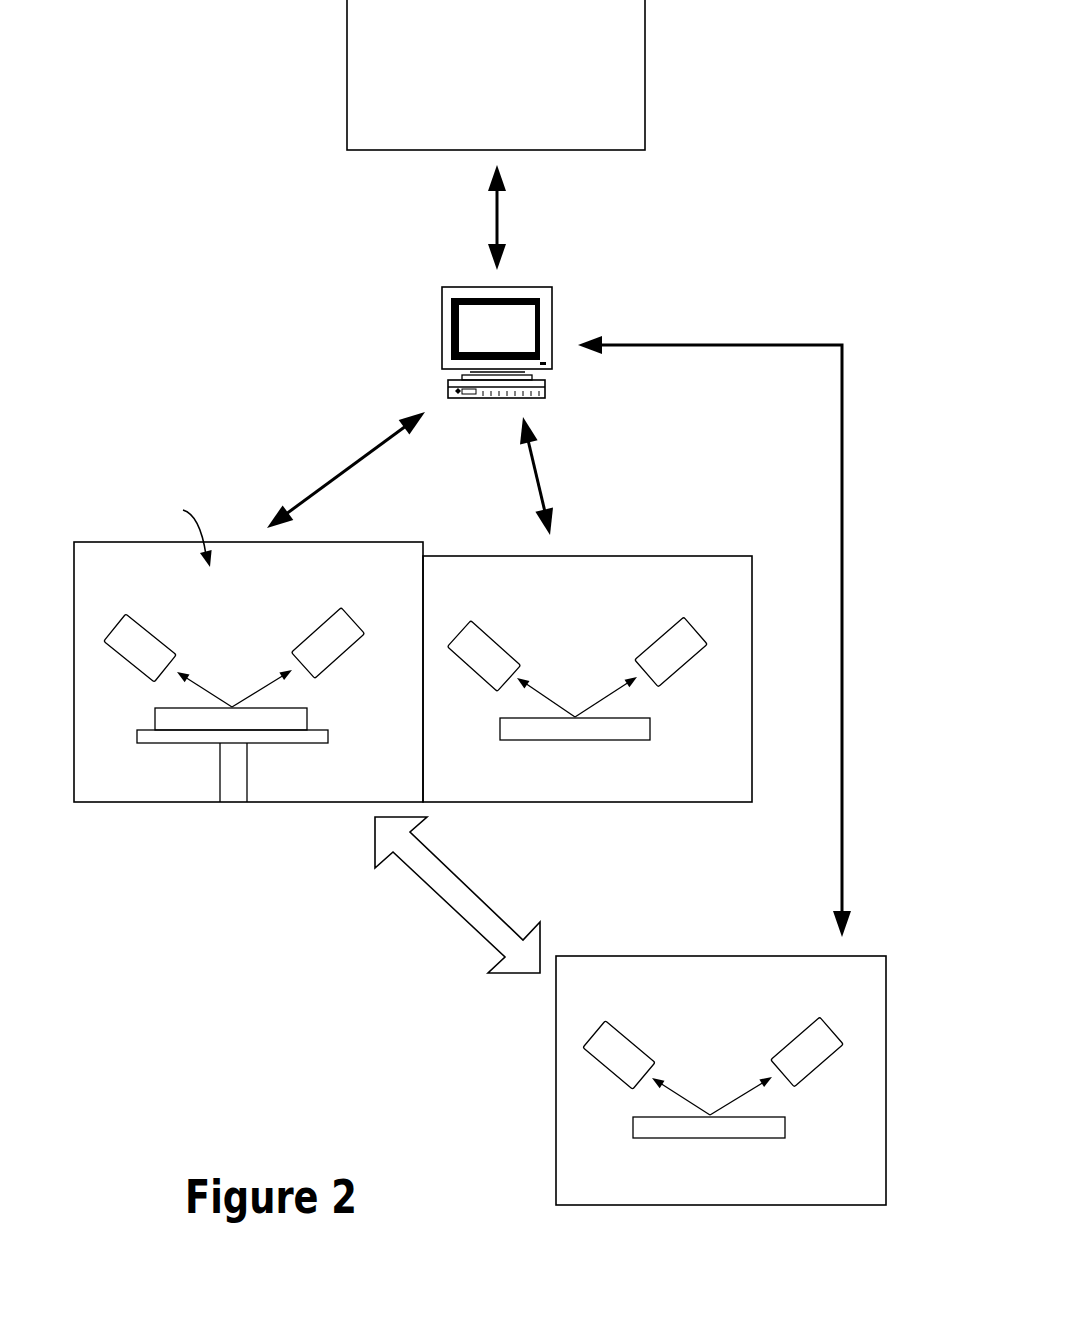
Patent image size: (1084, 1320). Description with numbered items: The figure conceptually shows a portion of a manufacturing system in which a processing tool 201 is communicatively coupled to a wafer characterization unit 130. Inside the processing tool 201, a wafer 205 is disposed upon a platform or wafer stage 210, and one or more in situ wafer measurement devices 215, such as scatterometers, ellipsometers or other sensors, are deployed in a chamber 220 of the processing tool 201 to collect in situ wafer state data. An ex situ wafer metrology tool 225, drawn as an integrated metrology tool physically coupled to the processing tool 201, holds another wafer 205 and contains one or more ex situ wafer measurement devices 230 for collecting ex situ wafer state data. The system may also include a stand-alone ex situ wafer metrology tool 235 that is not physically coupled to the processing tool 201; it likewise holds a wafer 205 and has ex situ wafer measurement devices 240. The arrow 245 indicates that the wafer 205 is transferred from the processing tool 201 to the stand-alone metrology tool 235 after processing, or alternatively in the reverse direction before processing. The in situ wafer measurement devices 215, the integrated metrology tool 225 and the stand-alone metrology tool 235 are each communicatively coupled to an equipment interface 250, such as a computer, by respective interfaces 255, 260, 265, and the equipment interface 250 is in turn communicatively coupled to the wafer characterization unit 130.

The wafer characterization unit 130 is at (505, 134).
The equipment interface 250 is at (442, 325).
The interface 255 is at (318, 482).
The interface 260 is at (540, 487).
The interface 265 is at (843, 507).
The chamber 220 is at (175, 532).
The processing tool 201 is at (178, 802).
The ex situ wafer metrology tool 225 is at (543, 802).
The ex situ wafer metrology tool 235 is at (683, 1205).
The in situ wafer measurement devices 215 is at (148, 627).
The wafer 205 is at (307, 720).
The wafer stage 210 is at (277, 744).
The ex situ wafer measurement devices 230 is at (482, 630).
The ex situ wafer measurement devices 240 is at (618, 1027).
The arrow 245 is at (458, 920).